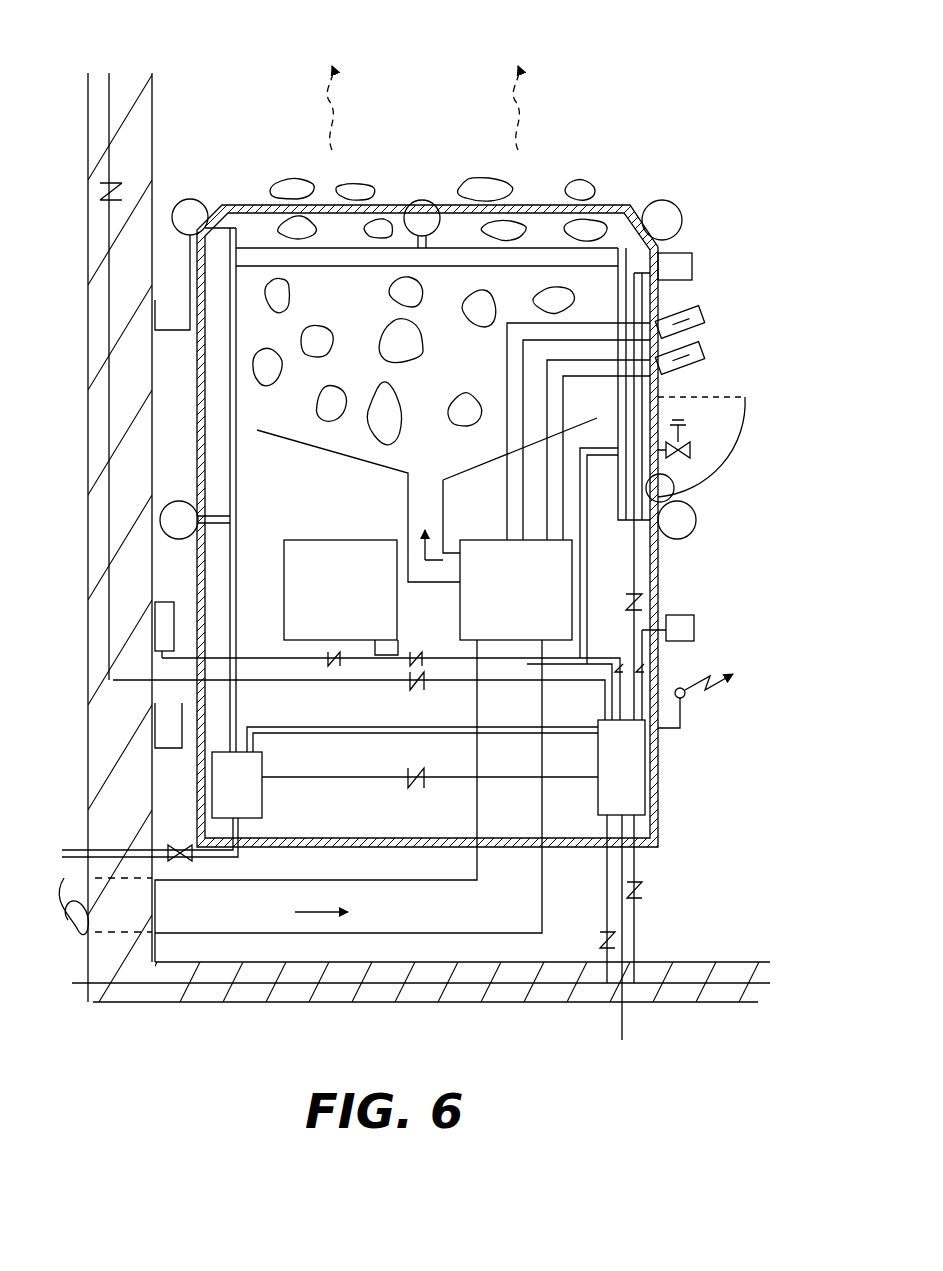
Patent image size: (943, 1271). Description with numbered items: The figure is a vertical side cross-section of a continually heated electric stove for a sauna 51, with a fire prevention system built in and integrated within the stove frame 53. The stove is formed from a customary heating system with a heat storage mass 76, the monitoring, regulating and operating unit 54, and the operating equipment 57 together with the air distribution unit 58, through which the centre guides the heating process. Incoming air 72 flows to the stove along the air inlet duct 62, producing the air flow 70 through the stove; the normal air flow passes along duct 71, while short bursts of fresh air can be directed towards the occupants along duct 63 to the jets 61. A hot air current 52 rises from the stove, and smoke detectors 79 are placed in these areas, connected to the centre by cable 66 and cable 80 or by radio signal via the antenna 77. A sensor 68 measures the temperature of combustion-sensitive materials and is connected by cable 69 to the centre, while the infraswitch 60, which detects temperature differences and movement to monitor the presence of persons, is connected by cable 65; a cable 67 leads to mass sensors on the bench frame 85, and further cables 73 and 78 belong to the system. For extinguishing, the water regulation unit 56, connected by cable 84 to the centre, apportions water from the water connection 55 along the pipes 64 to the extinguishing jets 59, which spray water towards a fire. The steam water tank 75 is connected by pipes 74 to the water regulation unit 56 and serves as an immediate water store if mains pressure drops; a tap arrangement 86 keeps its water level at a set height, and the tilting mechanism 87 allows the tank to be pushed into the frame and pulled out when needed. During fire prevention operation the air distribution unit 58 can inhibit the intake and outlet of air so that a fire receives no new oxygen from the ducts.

The sauna 51 is at (653, 120).
The hot air current 52 is at (520, 102).
The stove frame 53 is at (540, 205).
The monitoring, regulating and operating unit 54 is at (630, 768).
The water connection 55 is at (88, 850).
The water regulation unit 56 is at (255, 805).
The operating equipment 57 is at (320, 550).
The air distribution unit 58 is at (500, 550).
The jet 59 is at (196, 205).
The infraswitch 60 is at (700, 270).
The jet 61 is at (702, 330).
The air inlet duct 62 is at (68, 905).
The duct 63 is at (560, 410).
The pipes 64 is at (365, 280).
The cable 65 is at (636, 592).
The cable 66 is at (330, 690).
The cable 67 is at (717, 985).
The sensor 68 is at (505, 350).
The cable 69 is at (262, 658).
The air flow 70 is at (426, 525).
The duct 71 is at (420, 560).
The incoming air 72 is at (312, 905).
The cable 73 is at (205, 985).
The pipes 74 is at (372, 727).
The steam water tank 75 is at (705, 443).
The heat storage mass 76 is at (292, 190).
The antenna 77 is at (680, 718).
The cable 78 is at (622, 1012).
The smoke detector 79 is at (698, 628).
The cable 80 is at (660, 660).
The cable 84 is at (300, 777).
The bench frame 85 is at (745, 395).
The tap arrangement 86 is at (690, 455).
The tilting mechanism 87 is at (676, 490).